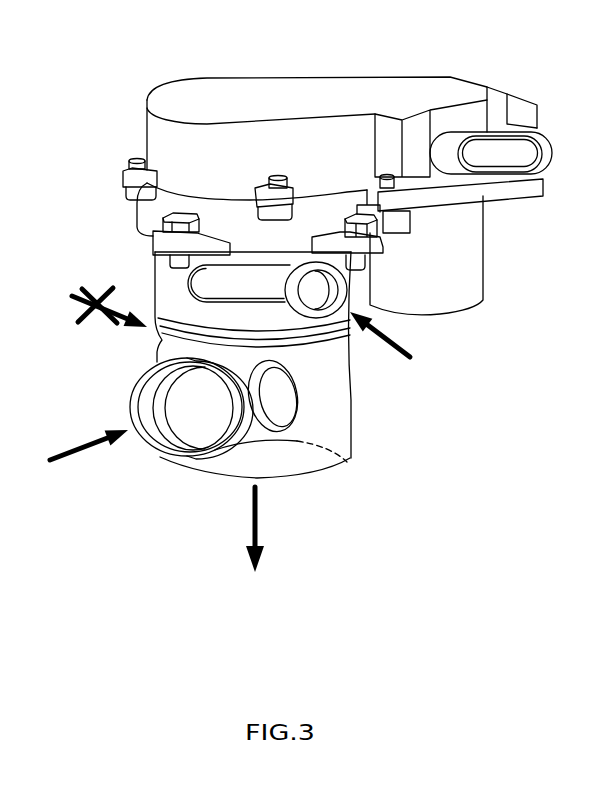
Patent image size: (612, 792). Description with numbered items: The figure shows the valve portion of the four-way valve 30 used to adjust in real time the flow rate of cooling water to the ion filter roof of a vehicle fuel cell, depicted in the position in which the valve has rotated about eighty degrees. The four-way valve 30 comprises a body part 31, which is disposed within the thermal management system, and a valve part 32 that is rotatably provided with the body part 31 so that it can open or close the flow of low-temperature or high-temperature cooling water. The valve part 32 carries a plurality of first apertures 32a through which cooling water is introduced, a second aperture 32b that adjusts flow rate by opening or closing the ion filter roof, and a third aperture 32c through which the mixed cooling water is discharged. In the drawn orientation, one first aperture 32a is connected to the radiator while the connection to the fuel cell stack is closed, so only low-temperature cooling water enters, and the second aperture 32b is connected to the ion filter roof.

The 4-way valve 30 is at (70, 138).
The body part 31 is at (155, 138).
The valve part 32 is at (156, 270).
The first apertures 32a is at (180, 392).
The second aperture 32b is at (248, 288).
The third aperture 32c is at (299, 458).